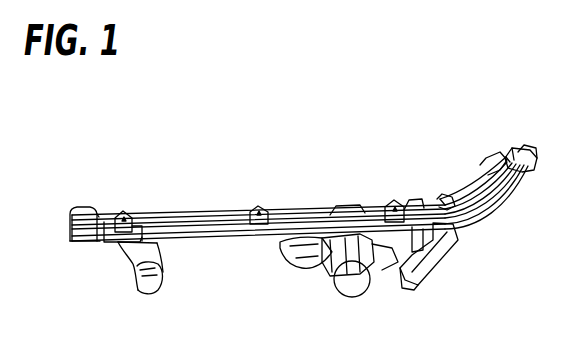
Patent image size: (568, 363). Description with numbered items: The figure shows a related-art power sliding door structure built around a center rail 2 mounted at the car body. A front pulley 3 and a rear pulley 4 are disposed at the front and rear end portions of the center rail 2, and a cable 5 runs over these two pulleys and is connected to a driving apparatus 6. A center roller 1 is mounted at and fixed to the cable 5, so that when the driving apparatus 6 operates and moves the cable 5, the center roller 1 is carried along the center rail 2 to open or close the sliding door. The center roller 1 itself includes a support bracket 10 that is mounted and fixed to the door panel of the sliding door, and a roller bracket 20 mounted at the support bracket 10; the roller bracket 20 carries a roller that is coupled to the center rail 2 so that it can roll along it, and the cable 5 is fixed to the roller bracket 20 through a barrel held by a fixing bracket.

The center roller 1 is at (126, 274).
The center rail 2 is at (213, 218).
The front pulley 3 is at (520, 154).
The rear pulley 4 is at (81, 208).
The cable 5 is at (464, 191).
The driving apparatus 6 is at (342, 288).
The support bracket 10 is at (137, 284).
The roller bracket 20 is at (160, 251).